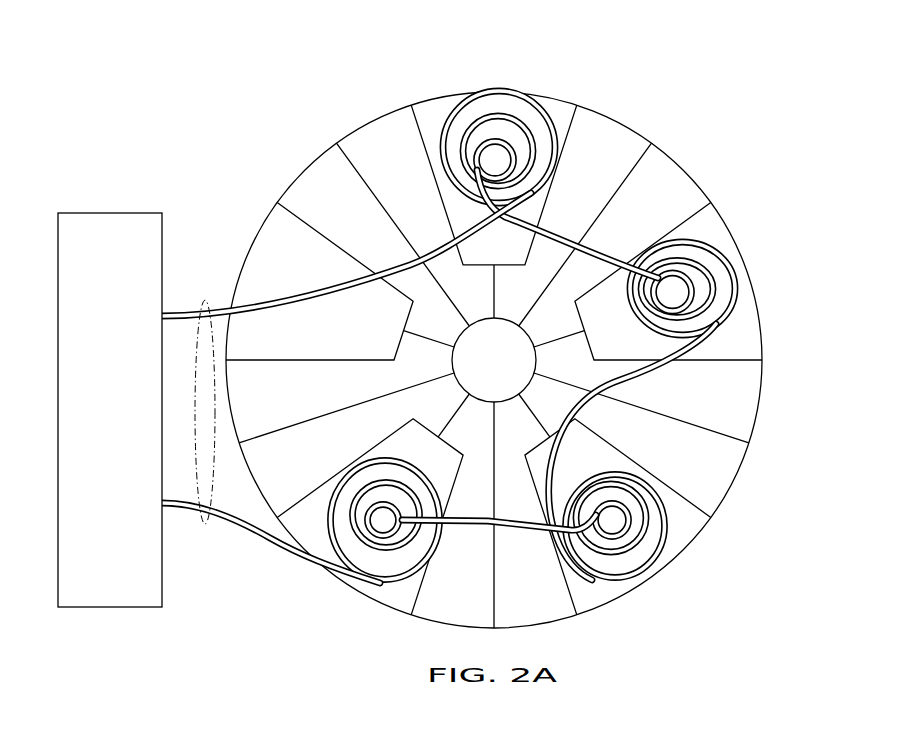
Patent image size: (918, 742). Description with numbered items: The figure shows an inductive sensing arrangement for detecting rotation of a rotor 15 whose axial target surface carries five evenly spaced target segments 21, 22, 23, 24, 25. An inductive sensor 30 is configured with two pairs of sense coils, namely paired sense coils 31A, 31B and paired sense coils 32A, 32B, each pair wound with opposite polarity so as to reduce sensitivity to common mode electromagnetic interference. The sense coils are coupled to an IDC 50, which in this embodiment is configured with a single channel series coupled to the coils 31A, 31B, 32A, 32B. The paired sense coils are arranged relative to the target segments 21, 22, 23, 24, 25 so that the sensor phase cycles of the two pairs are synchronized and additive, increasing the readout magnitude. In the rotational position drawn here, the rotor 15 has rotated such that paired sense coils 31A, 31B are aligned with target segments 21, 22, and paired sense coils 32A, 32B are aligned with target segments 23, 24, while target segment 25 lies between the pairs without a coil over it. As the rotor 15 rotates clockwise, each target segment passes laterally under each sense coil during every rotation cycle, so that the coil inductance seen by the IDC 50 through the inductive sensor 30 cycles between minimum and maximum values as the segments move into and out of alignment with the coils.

The rotor 15 is at (313, 156).
The target segment 21 is at (542, 102).
The target segment 22 is at (760, 333).
The target segment 23 is at (612, 592).
The target segment 24 is at (373, 592).
The target segment 25 is at (258, 230).
The inductive sensor 30 is at (203, 300).
The sense coil 31A is at (443, 145).
The sense coil 31B is at (718, 252).
The sense coil 32A is at (670, 532).
The sense coil 32B is at (346, 463).
The IDC 50 is at (96, 440).